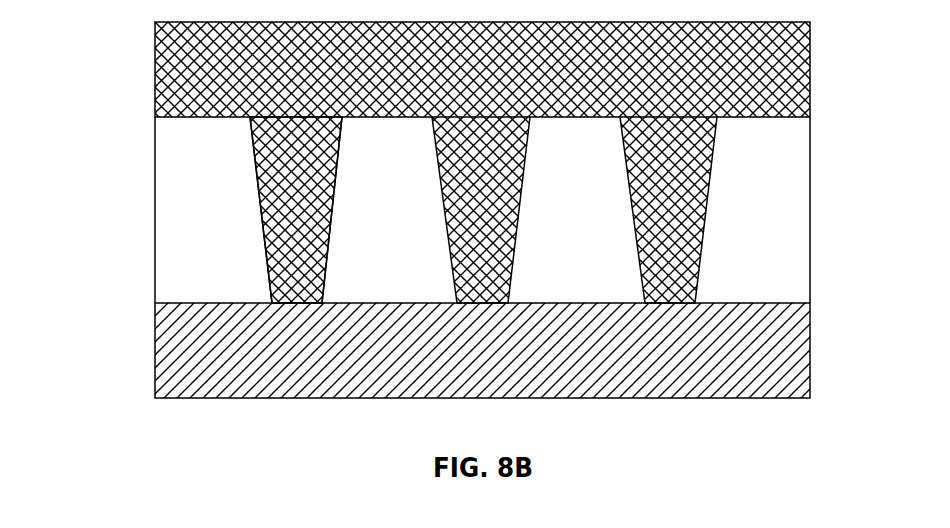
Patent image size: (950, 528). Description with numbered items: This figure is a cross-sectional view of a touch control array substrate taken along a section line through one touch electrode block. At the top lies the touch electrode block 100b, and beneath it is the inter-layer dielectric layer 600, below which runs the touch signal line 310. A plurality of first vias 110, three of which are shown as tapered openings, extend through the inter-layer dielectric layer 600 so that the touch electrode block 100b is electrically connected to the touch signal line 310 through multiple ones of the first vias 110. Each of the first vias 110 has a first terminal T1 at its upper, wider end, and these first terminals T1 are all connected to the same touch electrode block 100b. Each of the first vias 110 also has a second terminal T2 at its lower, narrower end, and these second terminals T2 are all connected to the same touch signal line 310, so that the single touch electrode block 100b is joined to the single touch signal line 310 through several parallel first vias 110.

The touch electrode block 100b is at (482, 162).
The first via 110 is at (295, 208).
The inter-layer dielectric layer 600 is at (482, 210).
The touch signal line 310 is at (482, 350).
The first terminal T1 is at (483, 135).
The second terminal T2 is at (483, 287).